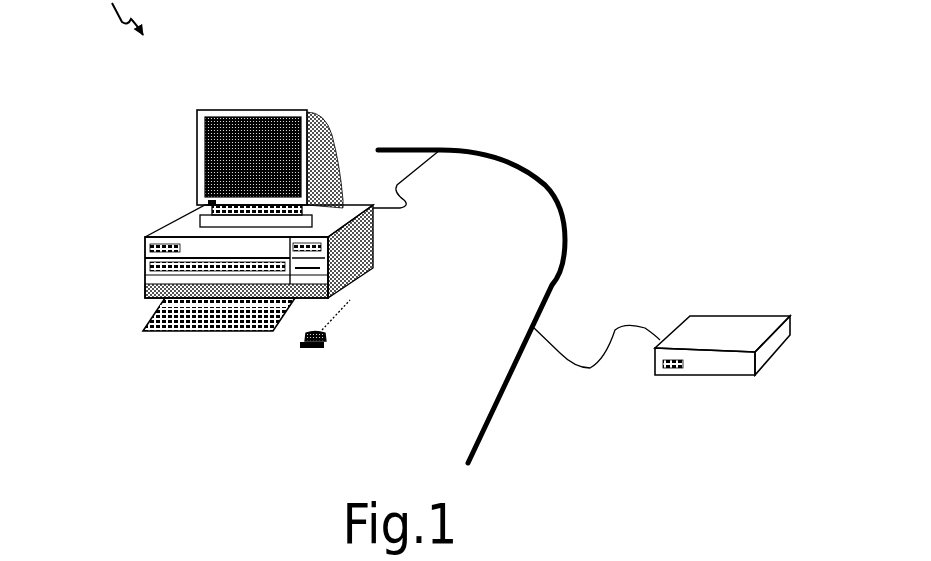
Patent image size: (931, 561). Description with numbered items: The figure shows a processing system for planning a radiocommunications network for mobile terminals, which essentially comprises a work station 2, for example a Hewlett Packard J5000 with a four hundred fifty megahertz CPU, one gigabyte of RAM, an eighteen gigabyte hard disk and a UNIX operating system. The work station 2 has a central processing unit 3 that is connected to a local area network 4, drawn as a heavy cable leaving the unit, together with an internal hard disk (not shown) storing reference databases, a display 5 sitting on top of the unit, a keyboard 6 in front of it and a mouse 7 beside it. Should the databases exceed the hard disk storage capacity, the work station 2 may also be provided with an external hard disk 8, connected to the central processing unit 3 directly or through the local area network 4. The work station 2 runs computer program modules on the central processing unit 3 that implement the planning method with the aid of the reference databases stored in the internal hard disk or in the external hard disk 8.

The work station 2 is at (152, 163).
The central processing unit 3 is at (370, 233).
The local area network 4 is at (553, 183).
The display 5 is at (285, 122).
The keyboard 6 is at (210, 332).
The mouse 7 is at (330, 340).
The external hard disk 8 is at (715, 330).